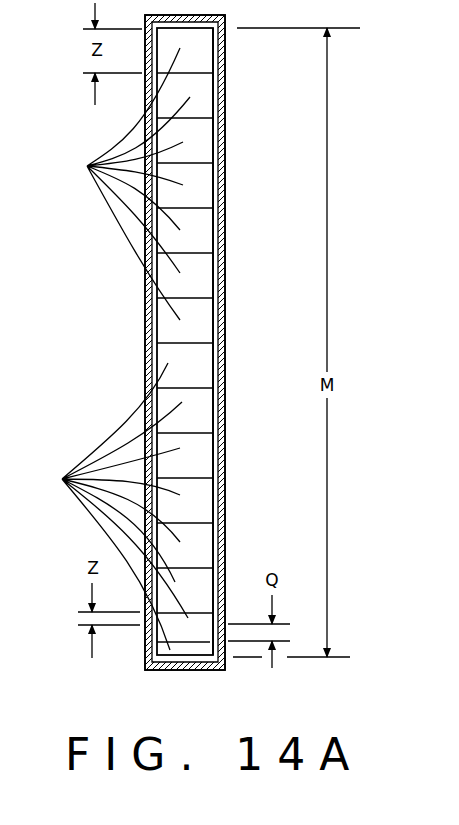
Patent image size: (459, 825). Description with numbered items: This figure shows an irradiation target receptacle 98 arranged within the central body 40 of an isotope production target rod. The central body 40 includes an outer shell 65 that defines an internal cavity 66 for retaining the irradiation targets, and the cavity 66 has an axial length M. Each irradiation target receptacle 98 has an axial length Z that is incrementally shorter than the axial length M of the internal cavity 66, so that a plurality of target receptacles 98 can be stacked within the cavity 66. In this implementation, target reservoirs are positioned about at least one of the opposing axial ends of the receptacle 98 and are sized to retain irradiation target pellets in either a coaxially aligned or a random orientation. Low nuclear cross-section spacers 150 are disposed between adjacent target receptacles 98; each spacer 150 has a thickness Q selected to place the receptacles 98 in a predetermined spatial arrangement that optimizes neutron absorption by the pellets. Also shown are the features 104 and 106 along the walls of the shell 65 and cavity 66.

The central body 40 is at (352, 200).
The outer shell 65 is at (143, 345).
The internal cavity 66 is at (221, 162).
The irradiation target receptacle 98 is at (110, 349).
The inner frame 104 is at (227, 103).
The inner wall 106 is at (214, 320).
The low nuclear cross-section spacer 150 is at (195, 637).